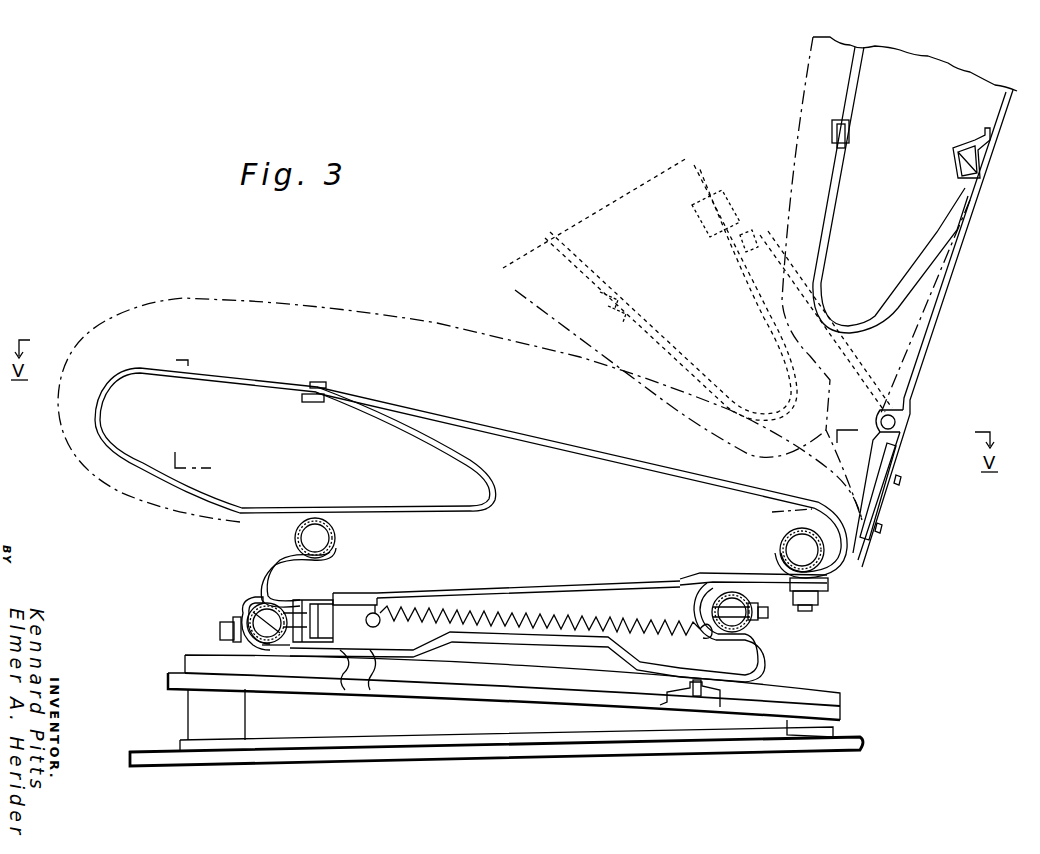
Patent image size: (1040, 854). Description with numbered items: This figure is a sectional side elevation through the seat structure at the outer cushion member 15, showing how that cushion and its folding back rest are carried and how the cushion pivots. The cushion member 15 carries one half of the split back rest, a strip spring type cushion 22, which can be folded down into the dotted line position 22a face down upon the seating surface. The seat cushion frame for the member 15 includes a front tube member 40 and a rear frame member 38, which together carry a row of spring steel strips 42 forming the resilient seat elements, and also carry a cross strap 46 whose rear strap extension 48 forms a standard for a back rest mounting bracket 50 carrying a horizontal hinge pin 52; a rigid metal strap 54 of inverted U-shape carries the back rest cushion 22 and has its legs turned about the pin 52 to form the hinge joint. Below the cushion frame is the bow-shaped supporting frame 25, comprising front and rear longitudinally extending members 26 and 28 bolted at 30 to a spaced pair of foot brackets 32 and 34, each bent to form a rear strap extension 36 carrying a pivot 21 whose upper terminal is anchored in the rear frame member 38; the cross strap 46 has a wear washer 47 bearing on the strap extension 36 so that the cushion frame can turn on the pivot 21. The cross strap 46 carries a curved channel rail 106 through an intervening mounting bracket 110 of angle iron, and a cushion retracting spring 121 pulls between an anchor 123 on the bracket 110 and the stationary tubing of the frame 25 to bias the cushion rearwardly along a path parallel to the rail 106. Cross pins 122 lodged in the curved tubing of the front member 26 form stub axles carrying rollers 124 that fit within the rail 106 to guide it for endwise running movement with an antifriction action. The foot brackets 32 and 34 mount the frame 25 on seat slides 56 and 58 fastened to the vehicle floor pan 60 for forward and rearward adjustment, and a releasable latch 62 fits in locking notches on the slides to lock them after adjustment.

The outer cushion member 15 is at (180, 300).
The back rest cushion 22 is at (815, 60).
The dotted line position of back rest cushion 22a is at (508, 276).
The spring steel strips 42 is at (290, 387).
The rigid metal strap 54 is at (962, 242).
The horizontal hinge pin 52 is at (907, 416).
The back rest mounting bracket 50 is at (876, 453).
The rear strap extension 48 is at (875, 495).
The rear frame member 38 is at (836, 550).
The wear washer 47 is at (828, 584).
The pivot 21 is at (818, 605).
The rear strap extension 36 is at (760, 590).
The bolt 30 is at (222, 627).
The rear longitudinally extending member 28 is at (760, 645).
The front tube member 40 is at (338, 534).
The cross strap 46 is at (507, 575).
The cushion retracting spring 121 is at (575, 620).
The curved channel rail 106 is at (312, 596).
The roller 124 is at (313, 606).
The mounting bracket 110 is at (360, 593).
The anchor 123 is at (380, 603).
The supporting frame 25 is at (272, 604).
The front longitudinally extending member 26 is at (254, 600).
The cross pin 122 is at (276, 645).
The foot bracket 34 is at (364, 650).
The foot bracket 32 is at (447, 647).
The seat slide 58 is at (356, 668).
The seat slide 56 is at (290, 672).
The vehicle floor pan 60 is at (450, 747).
The releasable latch 62 is at (694, 712).